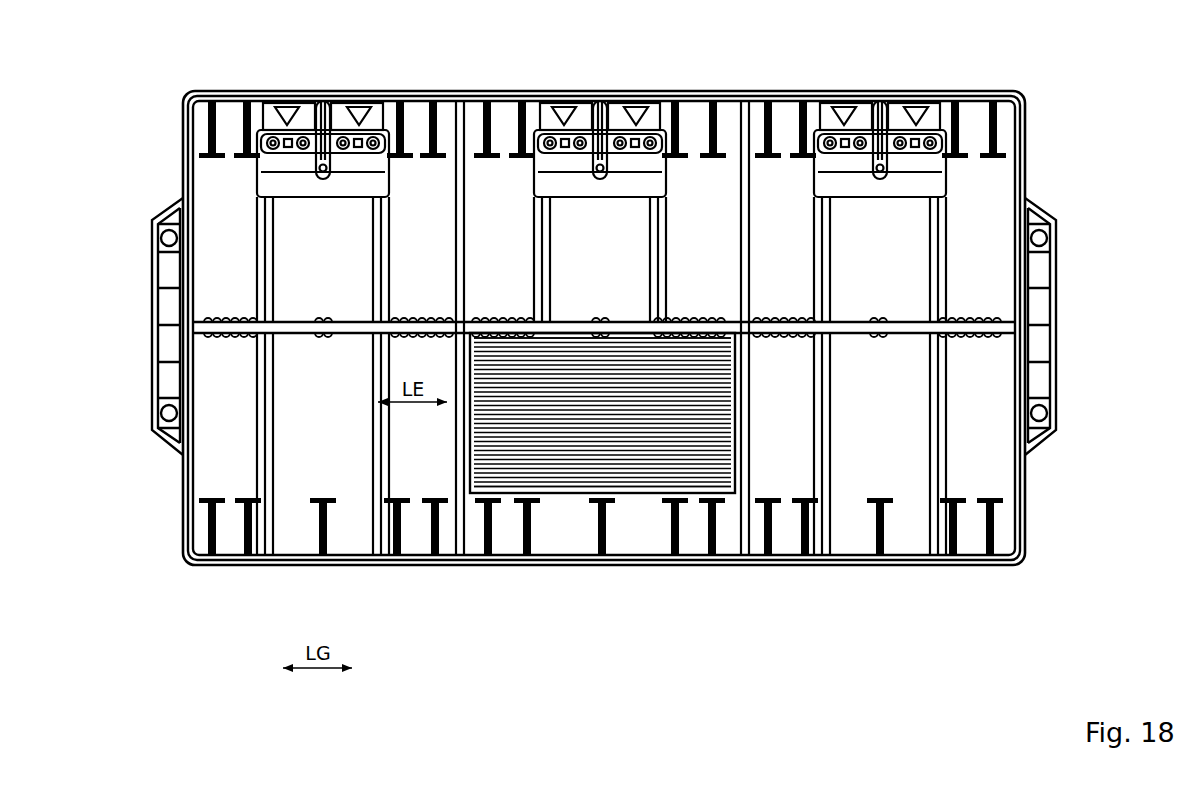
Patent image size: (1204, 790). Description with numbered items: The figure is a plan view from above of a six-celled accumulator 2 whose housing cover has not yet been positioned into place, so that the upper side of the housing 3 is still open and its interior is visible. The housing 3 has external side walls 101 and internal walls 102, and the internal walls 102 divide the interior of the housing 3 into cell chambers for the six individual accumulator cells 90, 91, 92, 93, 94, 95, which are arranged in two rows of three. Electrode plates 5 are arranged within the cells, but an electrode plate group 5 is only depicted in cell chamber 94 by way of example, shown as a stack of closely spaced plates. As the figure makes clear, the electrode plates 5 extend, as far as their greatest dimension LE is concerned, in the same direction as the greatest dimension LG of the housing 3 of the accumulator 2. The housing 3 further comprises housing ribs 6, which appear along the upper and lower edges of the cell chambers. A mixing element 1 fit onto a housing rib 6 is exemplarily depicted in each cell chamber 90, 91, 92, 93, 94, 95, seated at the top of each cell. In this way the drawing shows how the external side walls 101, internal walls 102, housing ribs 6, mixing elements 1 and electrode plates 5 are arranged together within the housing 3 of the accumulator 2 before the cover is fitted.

The mixing element 1 is at (368, 90).
The accumulator 2 is at (165, 83).
The housing 3 is at (1022, 126).
The electrode plates 5 is at (566, 470).
The housing ribs 6 is at (602, 333).
The accumulator cell 90 is at (323, 259).
The accumulator cell 91 is at (600, 259).
The accumulator cell 92 is at (880, 259).
The accumulator cell 93 is at (323, 444).
The accumulator cell 94 is at (602, 413).
The accumulator cell 95 is at (880, 444).
The external side walls 101 is at (563, 91).
The internal walls 102 is at (416, 320).